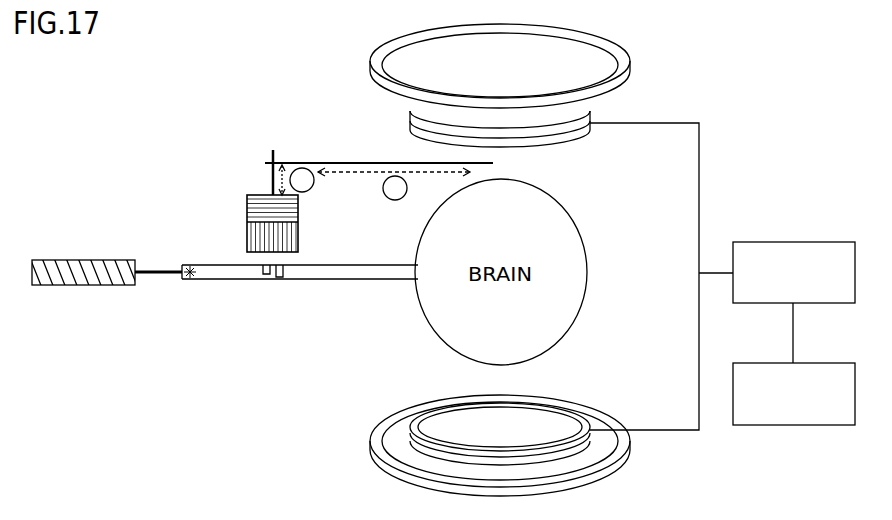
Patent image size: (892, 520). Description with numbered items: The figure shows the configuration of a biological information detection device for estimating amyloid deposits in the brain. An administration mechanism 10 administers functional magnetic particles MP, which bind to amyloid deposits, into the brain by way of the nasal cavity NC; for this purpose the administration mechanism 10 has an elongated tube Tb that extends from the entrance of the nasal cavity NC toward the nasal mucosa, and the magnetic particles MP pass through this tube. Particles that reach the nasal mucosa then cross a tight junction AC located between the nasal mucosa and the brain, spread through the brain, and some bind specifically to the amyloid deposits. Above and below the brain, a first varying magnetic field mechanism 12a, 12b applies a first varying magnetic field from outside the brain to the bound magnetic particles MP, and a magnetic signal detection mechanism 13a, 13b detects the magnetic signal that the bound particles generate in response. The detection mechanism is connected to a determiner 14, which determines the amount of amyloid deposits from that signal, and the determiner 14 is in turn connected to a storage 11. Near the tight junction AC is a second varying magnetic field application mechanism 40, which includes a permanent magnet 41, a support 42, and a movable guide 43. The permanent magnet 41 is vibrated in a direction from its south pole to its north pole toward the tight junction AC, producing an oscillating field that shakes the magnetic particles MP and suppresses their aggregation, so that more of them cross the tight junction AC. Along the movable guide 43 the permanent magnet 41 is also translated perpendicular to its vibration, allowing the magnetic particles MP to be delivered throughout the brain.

The administration mechanism 10 is at (83, 282).
The storage 11 is at (808, 363).
The first varying magnetic field mechanism 12a is at (613, 57).
The first varying magnetic field mechanism 12b is at (623, 458).
The magnetic signal detection mechanism 13a is at (573, 137).
The magnetic signal detection mechanism 13b is at (580, 415).
The determiner 14 is at (810, 242).
The second varying magnetic field application mechanism 40 is at (235, 133).
The permanent magnet 41 is at (247, 223).
The support 42 is at (272, 180).
The movable guide 43 is at (297, 162).
The tube Tb is at (145, 277).
The magnetic particles MP is at (170, 263).
The nasal cavity NC is at (185, 287).
The tight junction AC is at (273, 283).